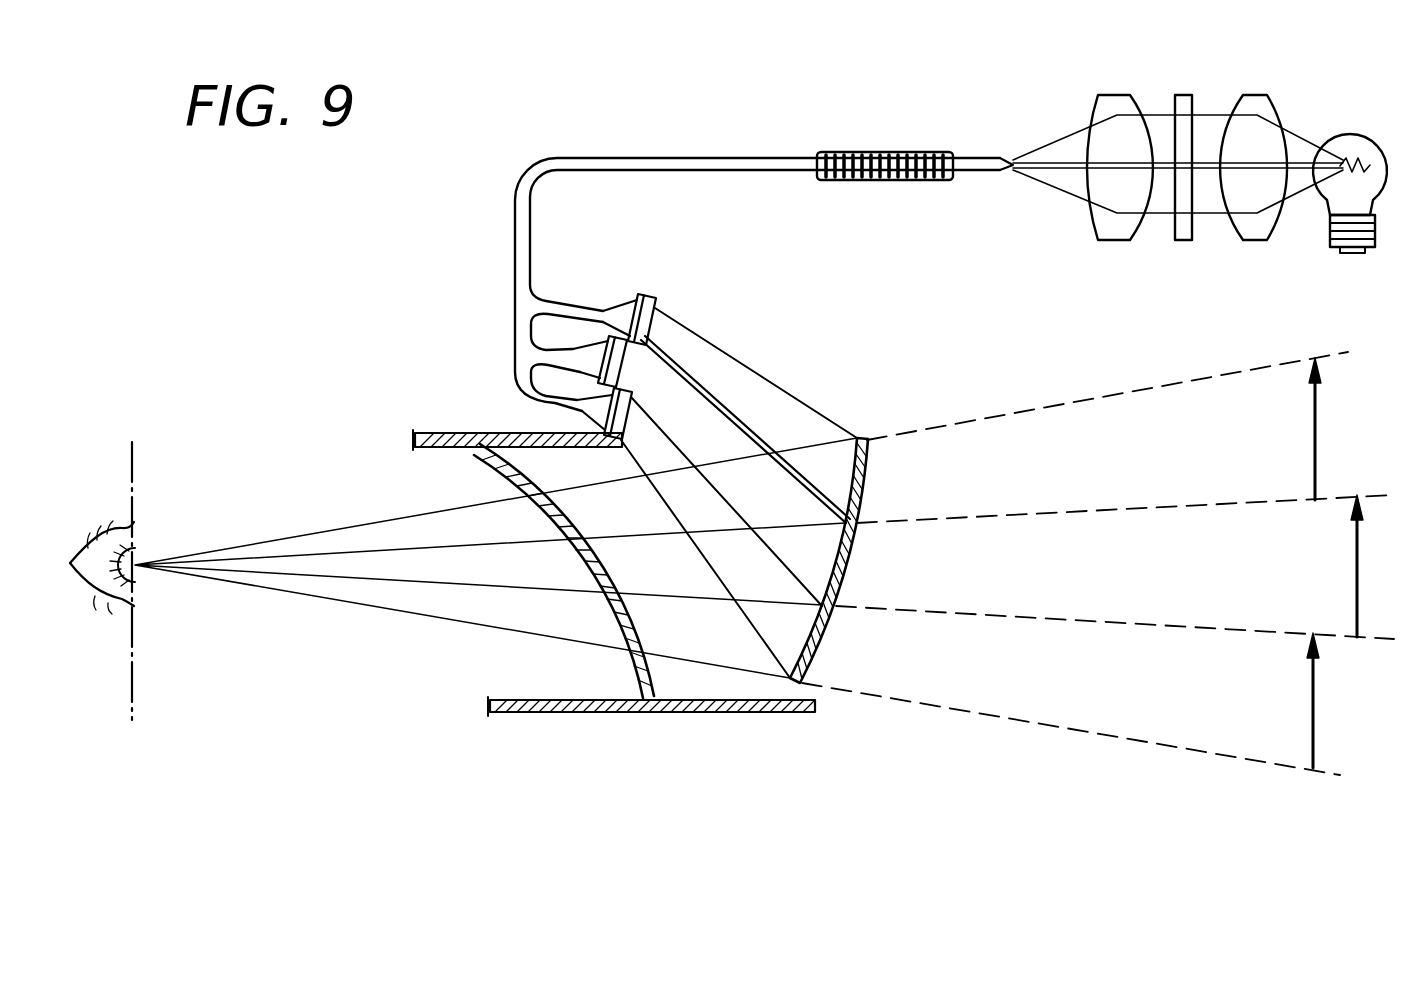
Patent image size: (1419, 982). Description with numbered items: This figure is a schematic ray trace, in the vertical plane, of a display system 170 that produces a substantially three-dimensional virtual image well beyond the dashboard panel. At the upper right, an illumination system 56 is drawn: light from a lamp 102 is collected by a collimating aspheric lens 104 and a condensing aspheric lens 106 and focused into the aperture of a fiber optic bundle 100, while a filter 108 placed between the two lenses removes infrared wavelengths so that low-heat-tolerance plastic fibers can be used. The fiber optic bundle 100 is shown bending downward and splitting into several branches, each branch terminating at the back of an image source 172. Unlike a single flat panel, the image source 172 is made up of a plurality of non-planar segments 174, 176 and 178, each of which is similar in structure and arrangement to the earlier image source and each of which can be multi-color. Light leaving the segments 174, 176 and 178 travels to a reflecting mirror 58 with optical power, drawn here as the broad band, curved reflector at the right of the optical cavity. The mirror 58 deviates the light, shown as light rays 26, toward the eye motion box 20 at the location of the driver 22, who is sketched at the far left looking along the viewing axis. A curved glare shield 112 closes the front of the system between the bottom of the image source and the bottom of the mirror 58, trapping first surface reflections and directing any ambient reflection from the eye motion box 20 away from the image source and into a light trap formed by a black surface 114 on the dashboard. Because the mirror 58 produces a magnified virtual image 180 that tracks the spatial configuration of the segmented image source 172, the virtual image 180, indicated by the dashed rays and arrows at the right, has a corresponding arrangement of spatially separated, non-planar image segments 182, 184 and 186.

The eye motion box 20 is at (132, 460).
The driver 22 is at (103, 586).
The light rays 26 is at (362, 607).
The illumination system 56 is at (1080, 211).
The reflecting mirror 58 is at (852, 558).
The fiber optic bundle 100 is at (895, 152).
The lamp 102 is at (1345, 133).
The collimating aspheric lens 104 is at (1255, 95).
The condensing aspheric lens 106 is at (1108, 95).
The filter 108 is at (1178, 245).
The glare shield 112 is at (633, 675).
The black surface 114 is at (525, 684).
The display system 170 is at (459, 374).
The image source 172 is at (610, 293).
The non-planar segment 174 is at (658, 318).
The non-planar segment 176 is at (652, 343).
The non-planar segment 178 is at (620, 428).
The virtual image 180 is at (1305, 351).
The image segment 182 is at (1313, 442).
The image segment 184 is at (1356, 575).
The image segment 186 is at (1311, 712).